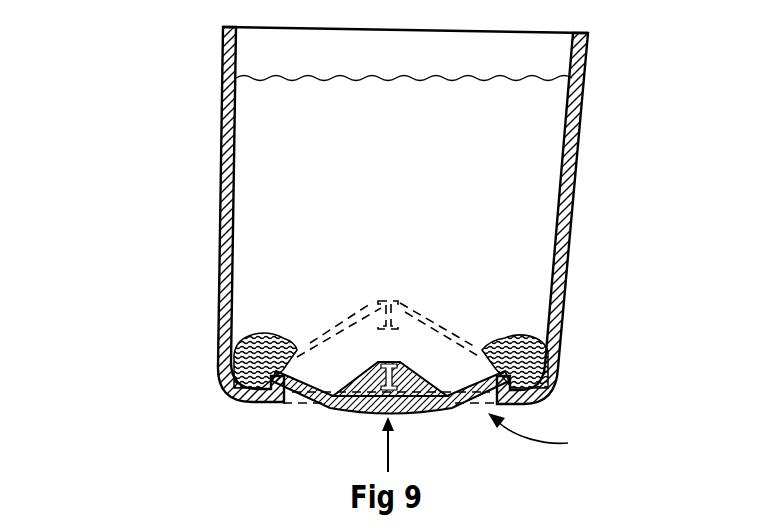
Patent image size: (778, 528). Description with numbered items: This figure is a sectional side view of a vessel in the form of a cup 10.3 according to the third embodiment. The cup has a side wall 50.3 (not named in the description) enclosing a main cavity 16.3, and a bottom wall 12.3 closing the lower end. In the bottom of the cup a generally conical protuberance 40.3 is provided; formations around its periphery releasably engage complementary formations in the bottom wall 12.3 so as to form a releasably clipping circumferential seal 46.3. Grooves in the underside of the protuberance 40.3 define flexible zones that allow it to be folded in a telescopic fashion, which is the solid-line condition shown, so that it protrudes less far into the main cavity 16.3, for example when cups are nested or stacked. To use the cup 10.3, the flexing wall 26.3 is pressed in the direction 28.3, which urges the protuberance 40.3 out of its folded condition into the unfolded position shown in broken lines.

The cup 10.3 is at (124, 158).
The container wall 50.3 is at (540, 148).
The main cavity 16.3 is at (424, 176).
The protuberance 40.3 is at (313, 343).
The circumferential seal 46.3 is at (258, 372).
The flexing wall 26.3 is at (352, 410).
The direction 28.3 is at (388, 443).
The bottom wall 12.3 is at (556, 438).